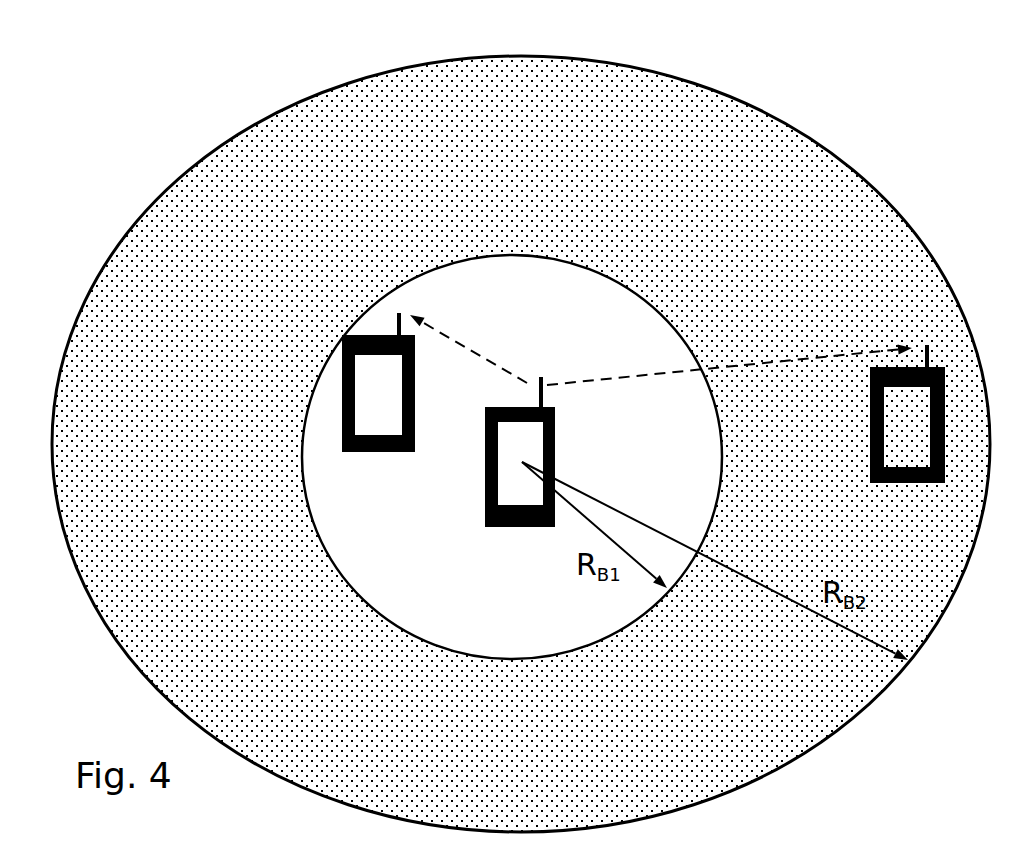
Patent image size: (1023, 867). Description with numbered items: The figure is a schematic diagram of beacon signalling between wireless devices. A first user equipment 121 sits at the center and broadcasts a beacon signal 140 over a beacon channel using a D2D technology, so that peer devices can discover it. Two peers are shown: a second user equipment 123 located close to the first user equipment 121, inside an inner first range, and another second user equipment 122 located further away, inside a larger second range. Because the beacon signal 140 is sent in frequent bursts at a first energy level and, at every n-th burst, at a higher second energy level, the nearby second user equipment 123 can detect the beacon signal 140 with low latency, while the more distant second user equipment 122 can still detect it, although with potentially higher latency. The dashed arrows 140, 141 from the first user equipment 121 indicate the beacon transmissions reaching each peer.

The first user equipment 121 is at (485, 497).
The second user equipment 122 is at (870, 475).
The second user equipment 123 is at (342, 446).
The beacon signal 140 is at (748, 364).
The communication link to terminal 123 141 is at (527, 383).